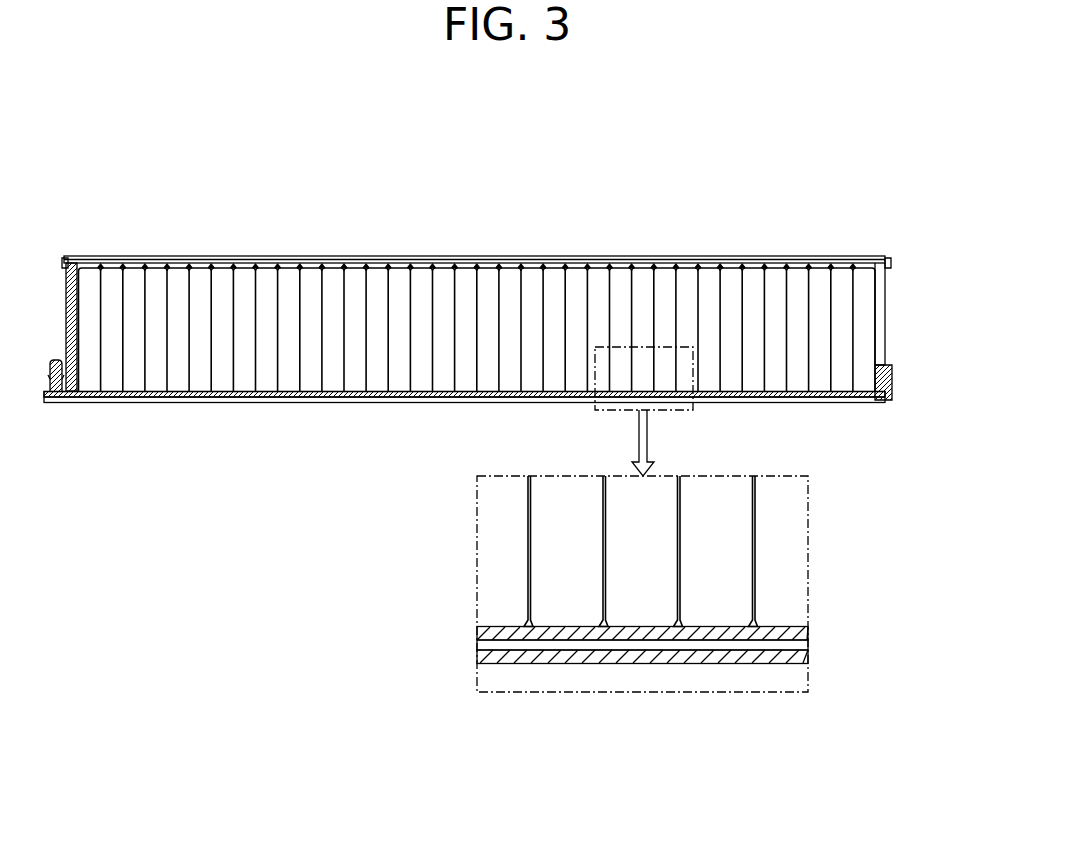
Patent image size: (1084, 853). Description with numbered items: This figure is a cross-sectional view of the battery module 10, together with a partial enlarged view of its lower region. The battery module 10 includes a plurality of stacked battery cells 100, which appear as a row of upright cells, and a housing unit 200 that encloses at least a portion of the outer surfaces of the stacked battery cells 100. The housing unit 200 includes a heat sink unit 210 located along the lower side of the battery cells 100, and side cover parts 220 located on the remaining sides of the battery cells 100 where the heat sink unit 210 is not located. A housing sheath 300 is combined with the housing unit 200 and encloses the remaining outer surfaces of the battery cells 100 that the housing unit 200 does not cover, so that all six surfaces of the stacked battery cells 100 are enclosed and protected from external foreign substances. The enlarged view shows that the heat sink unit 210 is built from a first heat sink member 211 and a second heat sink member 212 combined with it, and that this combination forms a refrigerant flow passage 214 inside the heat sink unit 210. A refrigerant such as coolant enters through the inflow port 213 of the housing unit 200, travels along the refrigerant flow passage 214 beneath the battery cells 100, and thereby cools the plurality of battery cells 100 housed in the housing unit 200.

The battery module 10 is at (77, 119).
The battery cells 100 is at (868, 297).
The housing unit 200 is at (468, 538).
The heat sink unit 210 is at (464, 603).
The first heat sink member 211 is at (732, 632).
The second heat sink member 212 is at (745, 768).
The inflow port 213 is at (68, 370).
The refrigerant flow passage 214 is at (318, 403).
The side cover parts 220 is at (68, 307).
The housing sheath 300 is at (765, 258).